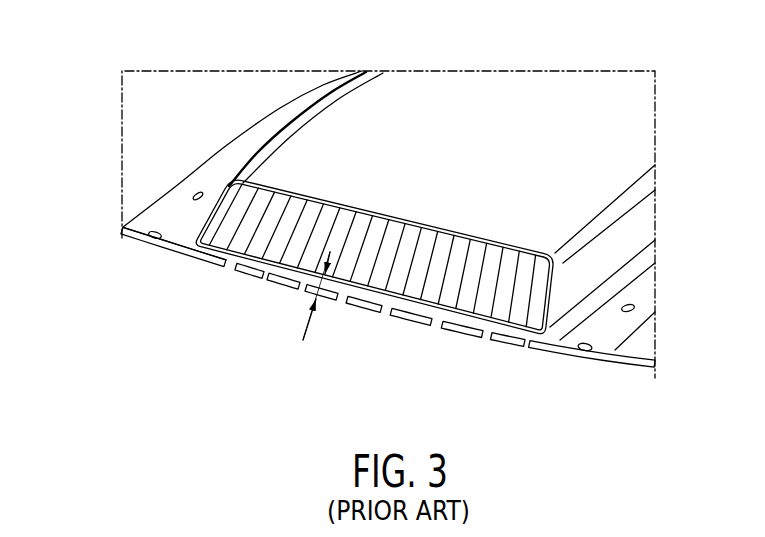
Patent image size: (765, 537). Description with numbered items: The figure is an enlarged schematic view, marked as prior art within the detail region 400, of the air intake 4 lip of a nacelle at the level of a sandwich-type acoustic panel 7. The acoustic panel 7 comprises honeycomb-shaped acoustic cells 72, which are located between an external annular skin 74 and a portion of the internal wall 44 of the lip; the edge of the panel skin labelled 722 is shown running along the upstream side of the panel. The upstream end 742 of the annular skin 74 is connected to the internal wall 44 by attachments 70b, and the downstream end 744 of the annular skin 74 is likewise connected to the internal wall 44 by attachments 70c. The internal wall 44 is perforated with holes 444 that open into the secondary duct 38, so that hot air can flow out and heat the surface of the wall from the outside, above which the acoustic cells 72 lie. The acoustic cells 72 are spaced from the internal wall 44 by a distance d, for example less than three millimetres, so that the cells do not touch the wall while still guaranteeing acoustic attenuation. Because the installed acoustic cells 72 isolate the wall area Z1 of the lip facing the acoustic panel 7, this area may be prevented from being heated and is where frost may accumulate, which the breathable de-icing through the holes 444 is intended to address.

The air intake 4 is at (155, 153).
The prior art roof region 400 is at (212, 118).
The upstream end of the annular skin 742 is at (163, 206).
The roof side rail edge 722 is at (286, 108).
The acoustic panel 7 is at (374, 202).
The external annular skin 74 is at (468, 232).
The acoustic cells 72 is at (453, 293).
The downstream end of the annular skin 744 is at (651, 281).
The attachments 70b is at (152, 242).
The attachments 70c is at (582, 355).
The internal wall 44 is at (388, 326).
The holes 444 is at (262, 277).
The secondary duct 38 is at (320, 384).
The distance d is at (322, 299).
The wall area Z1 is at (242, 109).